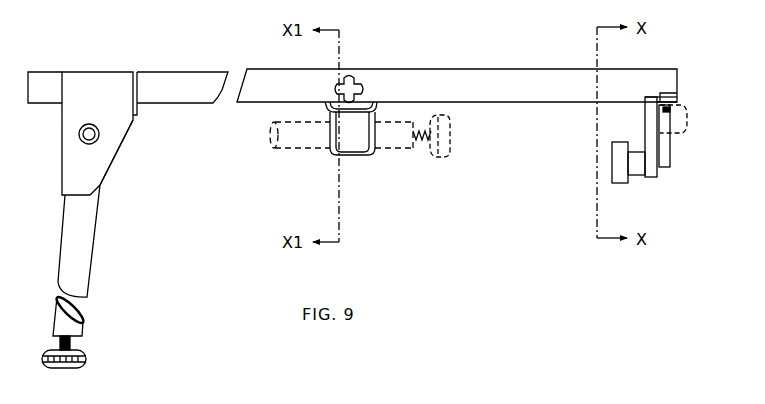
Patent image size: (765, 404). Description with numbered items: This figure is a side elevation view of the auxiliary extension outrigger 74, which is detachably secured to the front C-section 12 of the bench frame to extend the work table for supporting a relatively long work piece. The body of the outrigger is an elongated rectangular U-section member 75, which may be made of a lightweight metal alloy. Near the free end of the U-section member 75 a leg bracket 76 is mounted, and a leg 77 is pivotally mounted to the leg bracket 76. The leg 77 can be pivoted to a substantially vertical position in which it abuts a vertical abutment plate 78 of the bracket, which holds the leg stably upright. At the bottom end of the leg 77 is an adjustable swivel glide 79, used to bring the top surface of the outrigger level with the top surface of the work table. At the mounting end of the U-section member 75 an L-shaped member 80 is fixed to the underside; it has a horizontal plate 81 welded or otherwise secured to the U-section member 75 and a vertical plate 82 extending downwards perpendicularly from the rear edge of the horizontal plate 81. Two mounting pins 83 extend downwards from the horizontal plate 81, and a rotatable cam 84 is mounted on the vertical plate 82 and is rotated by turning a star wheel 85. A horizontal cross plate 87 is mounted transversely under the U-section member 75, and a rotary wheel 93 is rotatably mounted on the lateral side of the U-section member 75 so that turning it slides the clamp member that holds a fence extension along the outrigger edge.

The front C-section 12 is at (683, 130).
The auxiliary extension outrigger 74 is at (203, 67).
The U-section member 75 is at (500, 78).
The leg bracket 76 is at (122, 145).
The leg 77 is at (88, 247).
The vertical abutment plate 78 is at (62, 167).
The adjustable swivel glide 79 is at (88, 358).
The L-shaped member 80 is at (640, 112).
The horizontal plate 81 is at (675, 100).
The vertical plate 82 is at (650, 177).
The mounting pins 83 is at (662, 95).
The rotatable cam 84 is at (665, 168).
The star wheel 85 is at (355, 82).
The horizontal cross plate 87 is at (368, 107).
The rotary wheel 93 is at (617, 163).